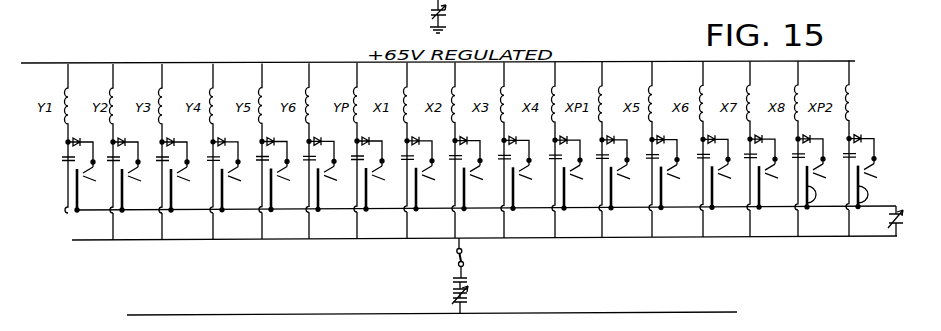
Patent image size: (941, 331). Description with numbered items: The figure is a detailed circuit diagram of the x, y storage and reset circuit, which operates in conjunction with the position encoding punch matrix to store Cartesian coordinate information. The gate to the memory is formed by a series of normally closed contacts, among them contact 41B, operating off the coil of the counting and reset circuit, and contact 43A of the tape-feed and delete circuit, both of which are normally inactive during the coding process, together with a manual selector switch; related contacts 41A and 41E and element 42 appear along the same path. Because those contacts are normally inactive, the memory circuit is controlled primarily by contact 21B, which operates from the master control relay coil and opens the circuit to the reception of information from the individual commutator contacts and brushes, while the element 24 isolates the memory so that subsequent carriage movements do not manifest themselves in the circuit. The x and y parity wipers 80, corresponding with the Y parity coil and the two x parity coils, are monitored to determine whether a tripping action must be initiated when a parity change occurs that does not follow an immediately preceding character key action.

The variable capacitor 41A is at (445, 25).
The switch 42 is at (465, 260).
The normally closed contact of tape-feed and delete circuit 43A is at (463, 274).
The normally closed contact 41B is at (453, 292).
The variable capacitor 41E is at (466, 298).
The parity wipers 80 is at (861, 208).
The tuning element 24 is at (904, 206).
The contact 21B is at (900, 231).